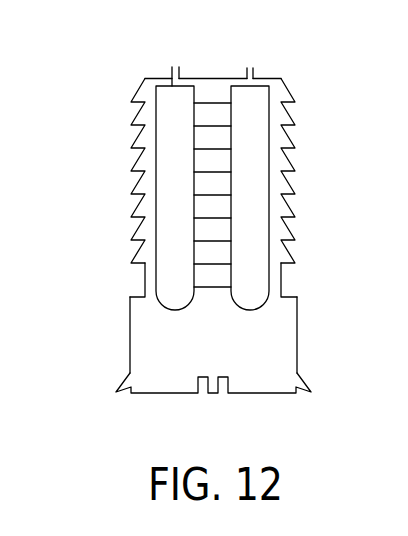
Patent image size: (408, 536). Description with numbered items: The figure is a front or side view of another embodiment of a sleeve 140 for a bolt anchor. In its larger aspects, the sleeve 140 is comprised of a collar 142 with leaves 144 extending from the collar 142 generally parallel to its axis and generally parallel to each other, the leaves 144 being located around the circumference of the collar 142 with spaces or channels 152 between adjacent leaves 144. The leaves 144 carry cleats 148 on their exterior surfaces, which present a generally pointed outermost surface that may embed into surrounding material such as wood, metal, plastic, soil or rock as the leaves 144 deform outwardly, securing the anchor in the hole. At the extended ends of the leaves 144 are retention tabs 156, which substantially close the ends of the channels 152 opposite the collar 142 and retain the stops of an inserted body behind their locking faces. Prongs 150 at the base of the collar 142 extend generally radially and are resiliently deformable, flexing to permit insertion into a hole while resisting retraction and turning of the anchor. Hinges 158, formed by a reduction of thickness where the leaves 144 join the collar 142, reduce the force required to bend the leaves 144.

The sleeve 140 is at (94, 243).
The collar 142 is at (298, 330).
The leaves 144 is at (143, 79).
The cleats 148 is at (136, 182).
The prongs 150 is at (118, 395).
The spaces or channels 152 is at (252, 226).
The retention tabs 156 is at (172, 68).
The hinges 158 is at (140, 280).